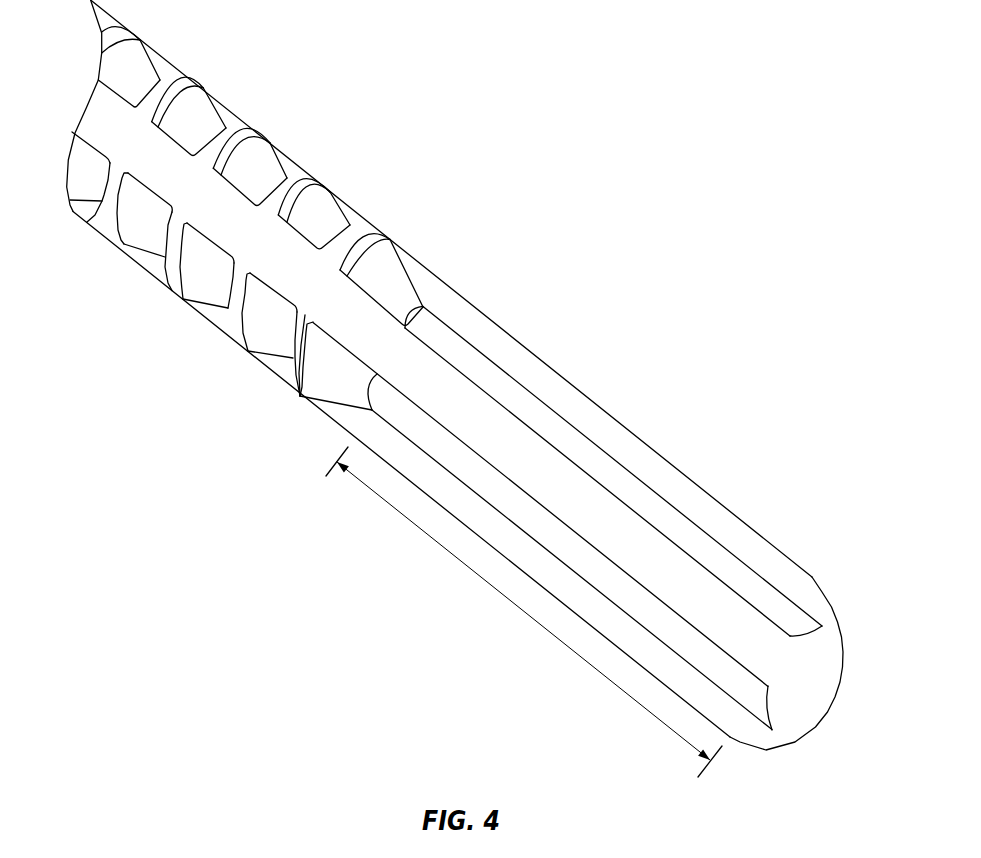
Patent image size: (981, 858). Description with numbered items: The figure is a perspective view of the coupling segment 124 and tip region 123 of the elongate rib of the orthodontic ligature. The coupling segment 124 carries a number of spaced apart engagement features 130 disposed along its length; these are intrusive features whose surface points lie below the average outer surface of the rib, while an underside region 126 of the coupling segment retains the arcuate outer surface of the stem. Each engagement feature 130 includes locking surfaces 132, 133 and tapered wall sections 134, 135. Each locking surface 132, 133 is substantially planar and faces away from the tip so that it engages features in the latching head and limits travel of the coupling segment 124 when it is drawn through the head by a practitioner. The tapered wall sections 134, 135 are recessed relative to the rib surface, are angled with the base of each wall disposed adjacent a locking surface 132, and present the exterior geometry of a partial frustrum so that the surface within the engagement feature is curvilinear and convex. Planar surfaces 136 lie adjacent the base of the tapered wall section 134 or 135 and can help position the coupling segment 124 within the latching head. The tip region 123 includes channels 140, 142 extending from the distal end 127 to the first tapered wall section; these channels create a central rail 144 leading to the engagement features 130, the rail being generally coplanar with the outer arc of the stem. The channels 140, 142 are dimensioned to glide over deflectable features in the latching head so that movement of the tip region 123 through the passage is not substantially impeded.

The tip region 123 is at (666, 732).
The coupling segment 124 is at (420, 143).
The underside region 126 is at (613, 650).
The distal end 127 is at (810, 690).
The engagement features 130 is at (297, 388).
The locking surface 132 is at (128, 257).
The locking surface 133 is at (237, 133).
The tapered wall section 134 is at (111, 243).
The tapered wall section 135 is at (193, 117).
The planar surfaces 136 is at (232, 118).
The channel 140 is at (682, 490).
The channel 142 is at (522, 550).
The central rail 144 is at (543, 400).